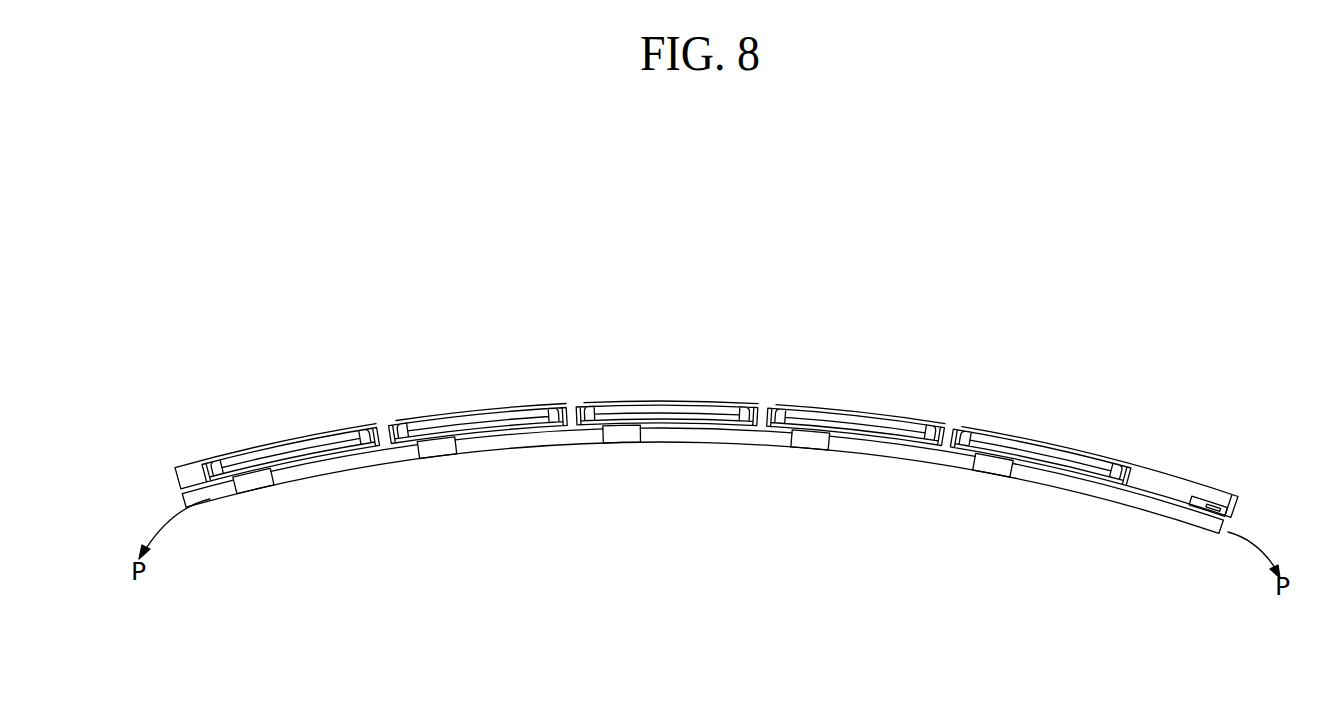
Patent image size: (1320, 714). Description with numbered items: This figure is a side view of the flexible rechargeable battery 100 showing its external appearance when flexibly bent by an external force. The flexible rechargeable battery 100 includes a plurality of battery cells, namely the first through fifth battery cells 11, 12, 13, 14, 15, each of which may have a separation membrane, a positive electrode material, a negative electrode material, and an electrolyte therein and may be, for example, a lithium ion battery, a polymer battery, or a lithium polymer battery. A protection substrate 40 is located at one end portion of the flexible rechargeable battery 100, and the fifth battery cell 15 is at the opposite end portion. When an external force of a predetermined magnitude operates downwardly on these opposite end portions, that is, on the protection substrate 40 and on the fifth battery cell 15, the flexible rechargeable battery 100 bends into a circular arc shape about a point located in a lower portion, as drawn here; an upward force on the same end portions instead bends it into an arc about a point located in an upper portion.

The flexible rechargeable battery 100 is at (964, 361).
The first battery cell 11 is at (1058, 458).
The second battery cell 12 is at (870, 423).
The third battery cell 13 is at (673, 408).
The fourth battery cell 14 is at (487, 418).
The fifth battery cell 15 is at (296, 450).
The protection substrate 40 is at (1204, 508).